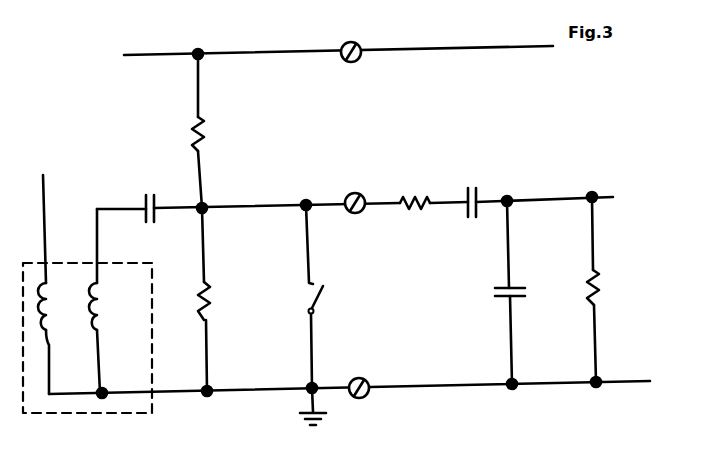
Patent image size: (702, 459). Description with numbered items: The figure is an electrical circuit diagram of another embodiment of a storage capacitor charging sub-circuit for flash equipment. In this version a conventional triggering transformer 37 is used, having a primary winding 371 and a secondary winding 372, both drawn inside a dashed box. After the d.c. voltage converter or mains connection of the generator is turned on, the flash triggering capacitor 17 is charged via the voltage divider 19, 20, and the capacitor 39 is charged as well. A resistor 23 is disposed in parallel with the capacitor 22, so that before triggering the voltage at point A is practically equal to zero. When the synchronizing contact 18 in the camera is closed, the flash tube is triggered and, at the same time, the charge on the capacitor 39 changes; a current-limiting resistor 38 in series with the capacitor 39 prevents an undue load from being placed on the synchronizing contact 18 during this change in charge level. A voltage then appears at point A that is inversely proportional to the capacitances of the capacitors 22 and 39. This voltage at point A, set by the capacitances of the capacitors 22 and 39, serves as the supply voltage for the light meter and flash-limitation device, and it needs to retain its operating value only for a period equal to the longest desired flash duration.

The flash triggering capacitor 17 is at (156, 198).
The synchronizing contact 18 is at (335, 308).
The voltage divider resistor 19 is at (205, 147).
The voltage divider resistor 20 is at (210, 318).
The capacitor 22 is at (516, 305).
The resistor 23 is at (600, 308).
The triggering transformer 37 is at (87, 304).
The primary winding 371 is at (98, 322).
The secondary winding 372 is at (66, 318).
The current-limiting resistor 38 is at (418, 194).
The capacitor 39 is at (477, 192).
The point A is at (513, 182).